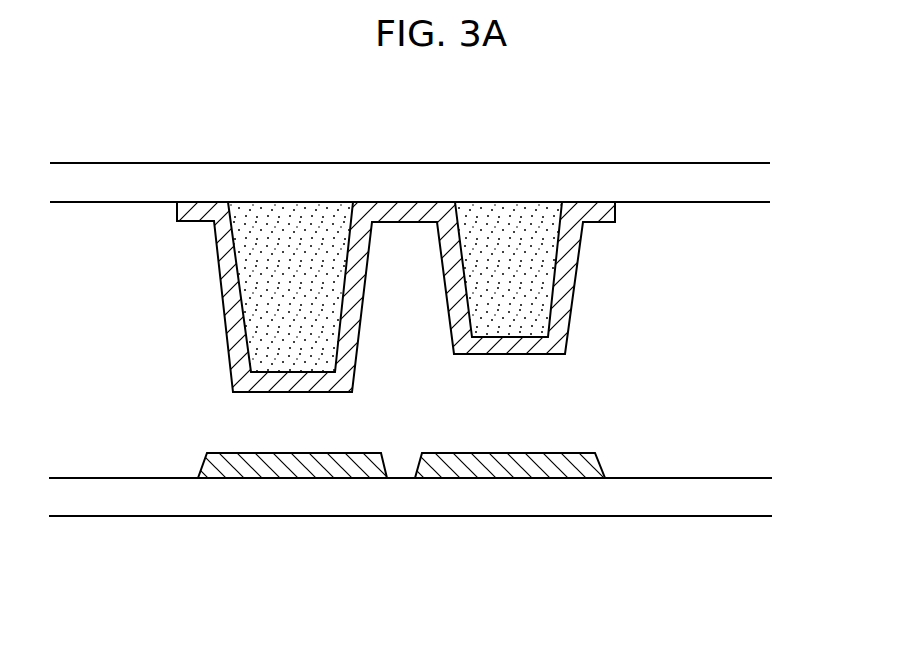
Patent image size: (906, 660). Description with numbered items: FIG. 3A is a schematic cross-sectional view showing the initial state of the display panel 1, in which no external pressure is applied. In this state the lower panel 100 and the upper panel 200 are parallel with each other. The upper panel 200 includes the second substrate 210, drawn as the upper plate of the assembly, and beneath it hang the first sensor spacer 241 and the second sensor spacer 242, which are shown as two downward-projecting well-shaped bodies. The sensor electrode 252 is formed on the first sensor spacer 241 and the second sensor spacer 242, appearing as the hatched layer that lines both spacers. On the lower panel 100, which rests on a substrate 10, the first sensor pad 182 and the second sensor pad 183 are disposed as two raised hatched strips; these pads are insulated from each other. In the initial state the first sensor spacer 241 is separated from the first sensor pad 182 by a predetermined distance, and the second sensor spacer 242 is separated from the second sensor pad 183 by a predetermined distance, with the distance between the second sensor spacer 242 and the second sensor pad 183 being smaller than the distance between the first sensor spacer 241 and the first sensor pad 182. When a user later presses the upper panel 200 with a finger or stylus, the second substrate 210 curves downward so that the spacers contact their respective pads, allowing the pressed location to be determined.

The display panel 1 is at (397, 522).
The substrate 10 is at (150, 497).
The lower panel 100 is at (444, 512).
The first sensor pad 182 is at (520, 458).
The second sensor pad 183 is at (278, 470).
The upper panel 200 is at (445, 247).
The second substrate 210 is at (668, 188).
The first sensor spacer 241 is at (503, 240).
The second sensor spacer 242 is at (286, 222).
The sensor electrode 252 is at (337, 290).